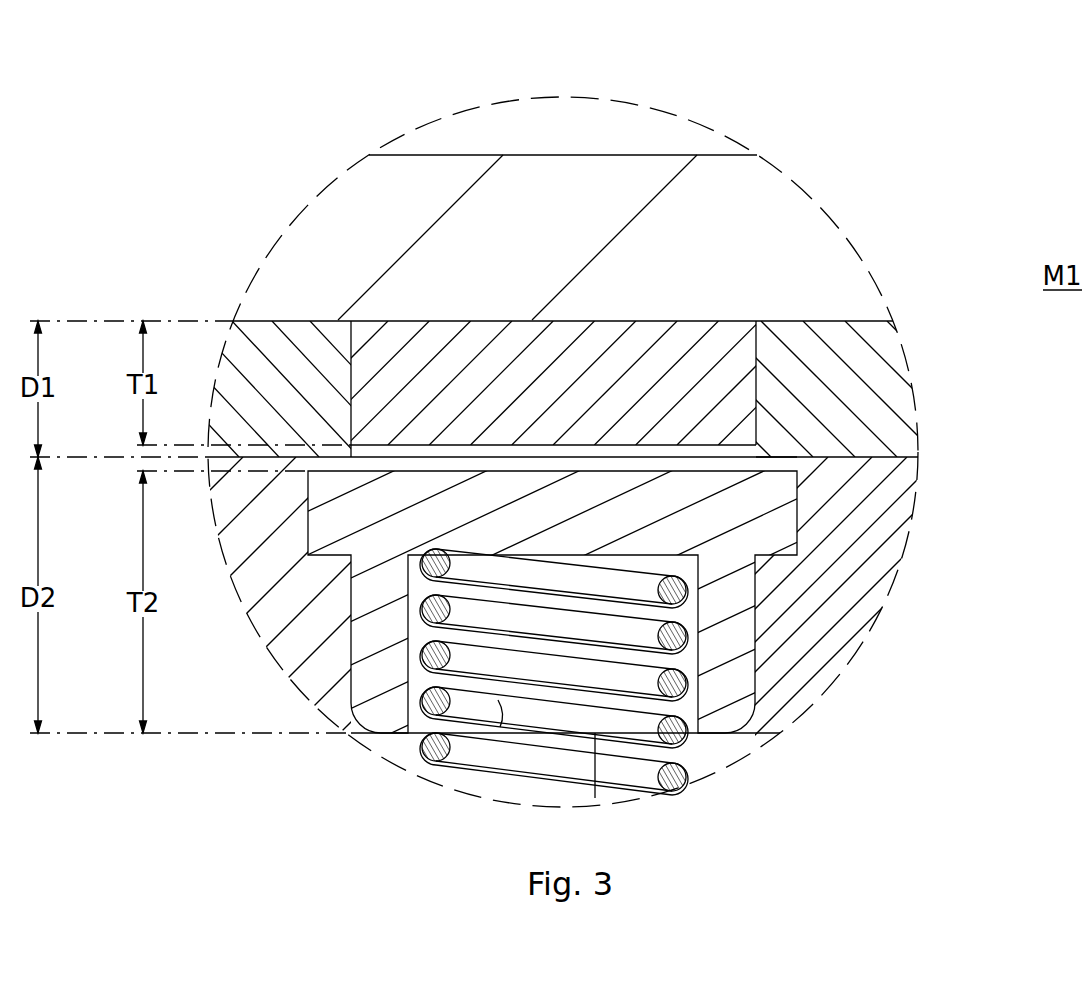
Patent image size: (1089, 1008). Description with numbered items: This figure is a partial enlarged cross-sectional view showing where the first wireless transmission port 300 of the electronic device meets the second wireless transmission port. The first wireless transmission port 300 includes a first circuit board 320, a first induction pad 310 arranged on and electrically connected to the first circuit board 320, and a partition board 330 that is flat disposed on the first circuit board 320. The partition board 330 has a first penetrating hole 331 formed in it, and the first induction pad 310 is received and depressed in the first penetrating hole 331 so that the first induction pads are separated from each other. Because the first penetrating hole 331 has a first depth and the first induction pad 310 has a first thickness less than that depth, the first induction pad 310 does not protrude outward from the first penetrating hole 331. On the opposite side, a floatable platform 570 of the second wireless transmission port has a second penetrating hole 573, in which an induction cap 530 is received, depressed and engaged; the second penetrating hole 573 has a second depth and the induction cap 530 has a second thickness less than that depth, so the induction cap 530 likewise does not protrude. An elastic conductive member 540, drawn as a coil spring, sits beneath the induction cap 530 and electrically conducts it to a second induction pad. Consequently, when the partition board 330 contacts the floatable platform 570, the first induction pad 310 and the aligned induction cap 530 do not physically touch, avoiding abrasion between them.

The first wireless transmission port 300 is at (1000, 72).
The first induction pad 310 is at (693, 367).
The first circuit board 320 is at (698, 208).
The partition board 330 is at (847, 361).
The first penetrating hole 331 is at (350, 447).
The induction cap 530 is at (730, 512).
The elastic conductive member 540 is at (680, 736).
The floatable platform 570 is at (815, 593).
The second penetrating hole 573 is at (785, 465).